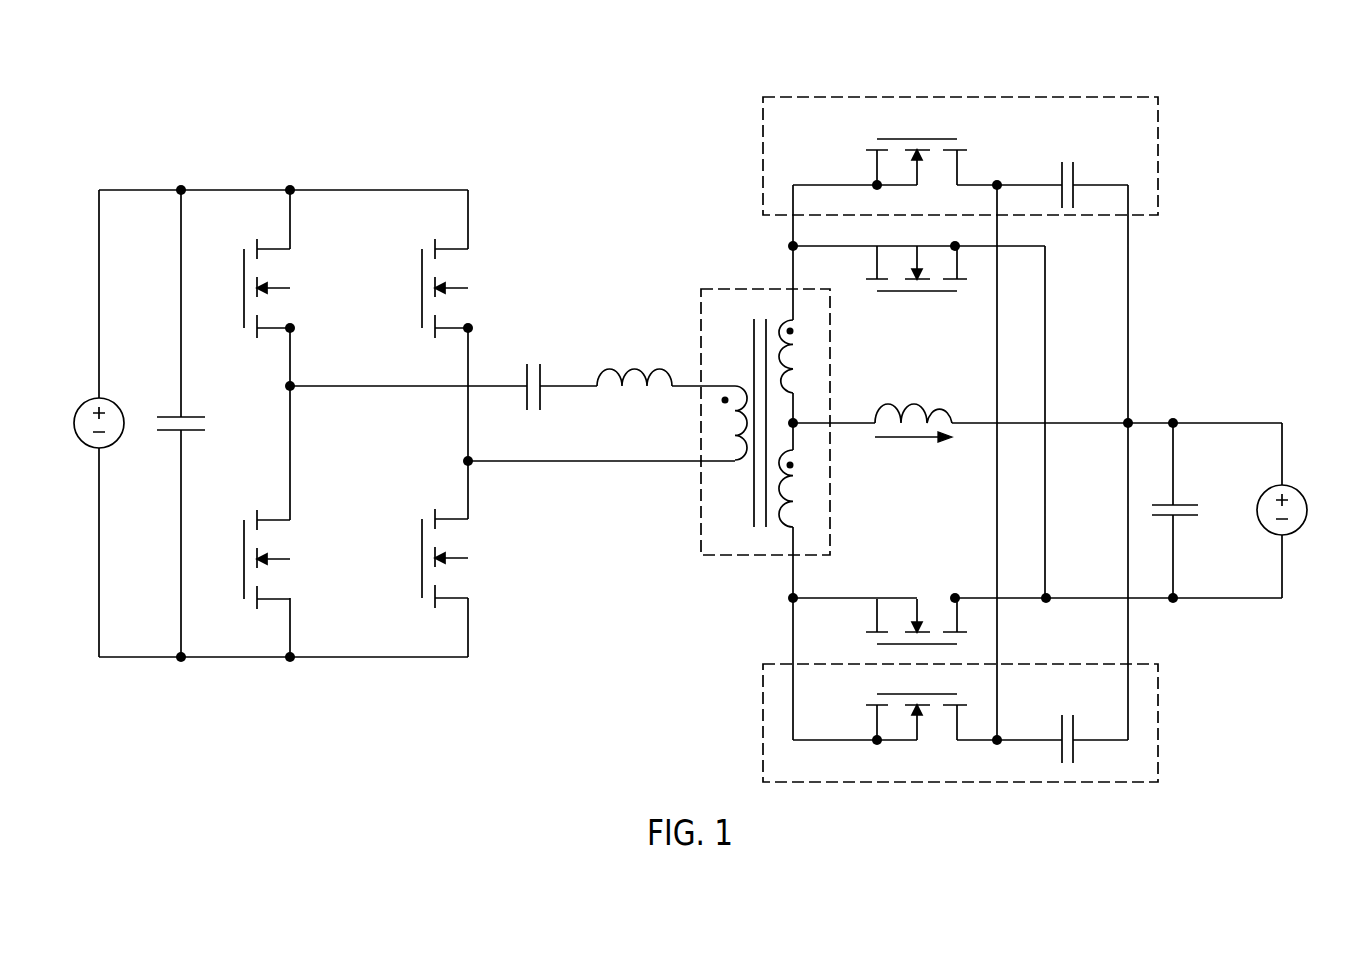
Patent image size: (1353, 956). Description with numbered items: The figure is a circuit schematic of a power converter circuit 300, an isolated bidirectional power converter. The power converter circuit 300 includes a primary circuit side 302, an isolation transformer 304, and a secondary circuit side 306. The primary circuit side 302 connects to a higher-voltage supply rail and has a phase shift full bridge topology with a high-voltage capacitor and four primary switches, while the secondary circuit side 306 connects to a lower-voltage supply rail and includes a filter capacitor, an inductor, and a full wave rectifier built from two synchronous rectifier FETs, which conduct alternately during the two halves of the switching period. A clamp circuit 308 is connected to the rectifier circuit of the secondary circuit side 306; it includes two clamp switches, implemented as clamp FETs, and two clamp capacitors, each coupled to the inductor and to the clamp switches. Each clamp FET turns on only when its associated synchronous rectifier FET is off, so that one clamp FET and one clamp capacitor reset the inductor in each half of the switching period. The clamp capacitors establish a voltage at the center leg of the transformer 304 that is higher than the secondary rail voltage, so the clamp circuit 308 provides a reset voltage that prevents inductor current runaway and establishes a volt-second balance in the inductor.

The power converter circuit 300 is at (166, 58).
The primary circuit side 302 is at (484, 166).
The isolation transformer 304 is at (742, 289).
The secondary circuit side 306 is at (1178, 80).
The clamp circuit 308 is at (1158, 152).